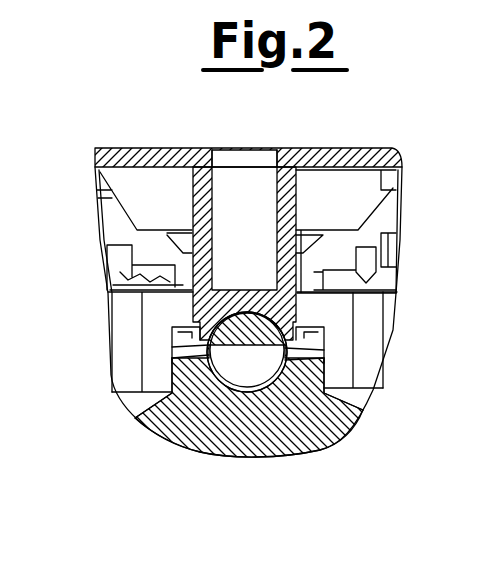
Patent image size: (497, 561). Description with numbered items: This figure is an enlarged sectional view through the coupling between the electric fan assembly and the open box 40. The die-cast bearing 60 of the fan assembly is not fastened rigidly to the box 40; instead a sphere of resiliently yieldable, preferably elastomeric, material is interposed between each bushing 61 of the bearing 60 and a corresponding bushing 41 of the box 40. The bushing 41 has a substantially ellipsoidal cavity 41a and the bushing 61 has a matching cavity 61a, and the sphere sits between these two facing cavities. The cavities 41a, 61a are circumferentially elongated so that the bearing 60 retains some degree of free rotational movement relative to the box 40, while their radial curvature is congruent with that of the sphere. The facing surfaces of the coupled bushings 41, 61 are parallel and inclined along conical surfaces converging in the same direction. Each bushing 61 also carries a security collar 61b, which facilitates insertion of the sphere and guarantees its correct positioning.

The open box 40 is at (183, 148).
The bushing 41 is at (293, 207).
The cavity 41a is at (200, 327).
The bearing 60 is at (322, 449).
The bushing 61 is at (363, 407).
The cavity 61a is at (185, 381).
The security collar 61b is at (312, 334).